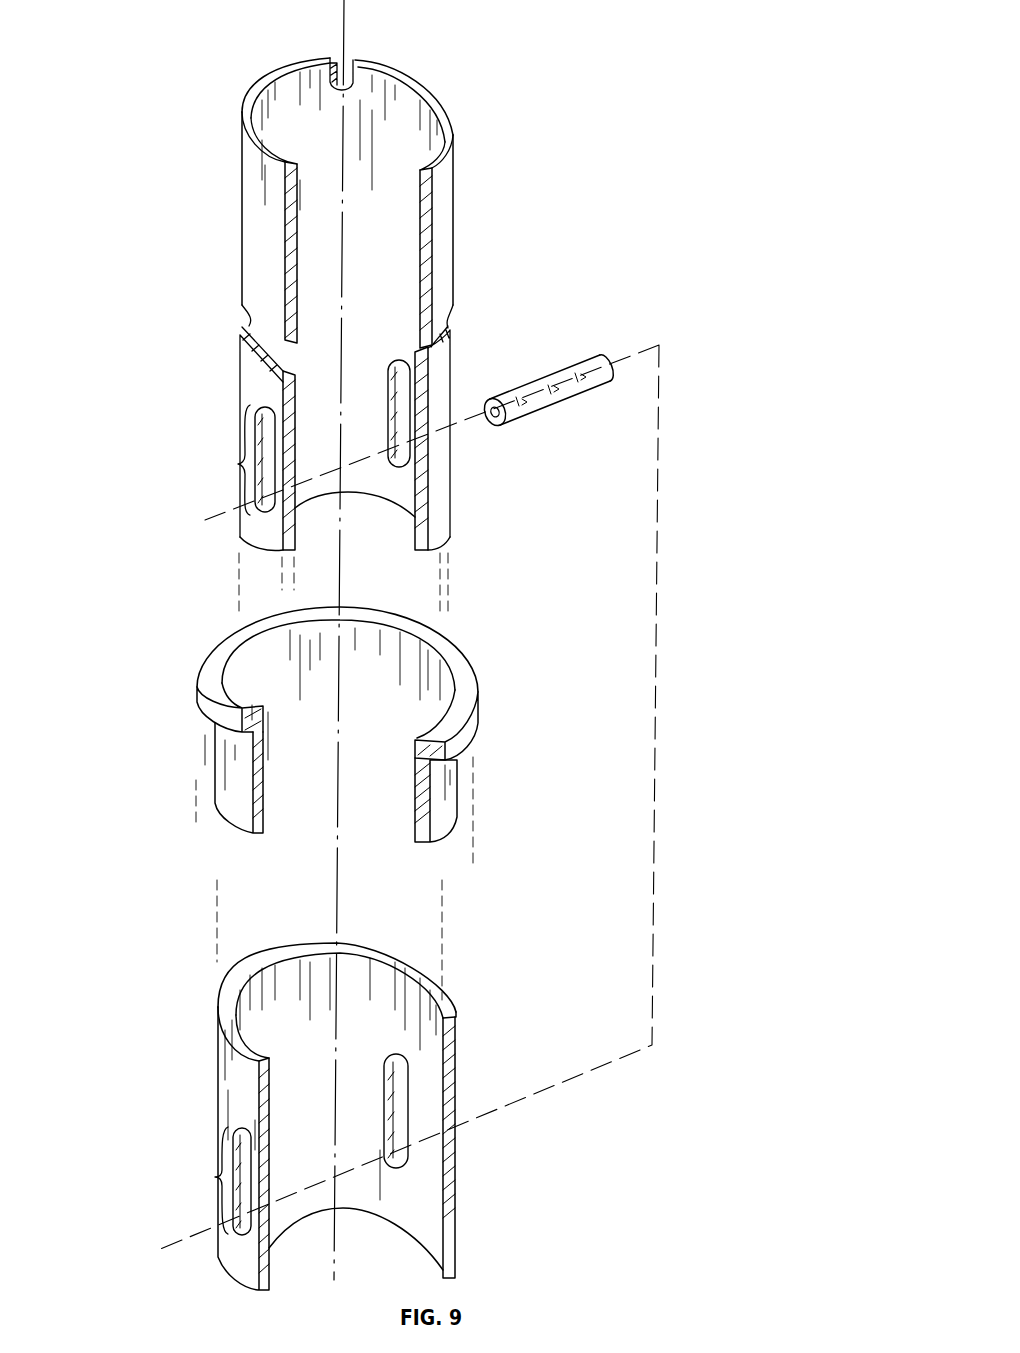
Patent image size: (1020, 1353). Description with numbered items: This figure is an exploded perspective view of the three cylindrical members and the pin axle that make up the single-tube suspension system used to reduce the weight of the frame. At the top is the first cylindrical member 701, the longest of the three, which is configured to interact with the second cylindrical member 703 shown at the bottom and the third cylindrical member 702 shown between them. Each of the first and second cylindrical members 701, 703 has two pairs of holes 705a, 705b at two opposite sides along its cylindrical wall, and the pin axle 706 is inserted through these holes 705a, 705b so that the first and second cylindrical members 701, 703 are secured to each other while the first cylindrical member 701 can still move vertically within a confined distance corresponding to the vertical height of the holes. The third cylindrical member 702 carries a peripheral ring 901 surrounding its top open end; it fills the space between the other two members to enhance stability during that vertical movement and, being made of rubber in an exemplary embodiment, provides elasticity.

The first cylindrical member 701 is at (440, 215).
The third cylindrical member 702 is at (228, 783).
The second cylindrical member 703 is at (237, 1090).
The pair of holes 705a is at (215, 1177).
The pair of holes 705b is at (237, 464).
The pin axle 706 is at (597, 355).
The peripheral ring 901 is at (215, 673).